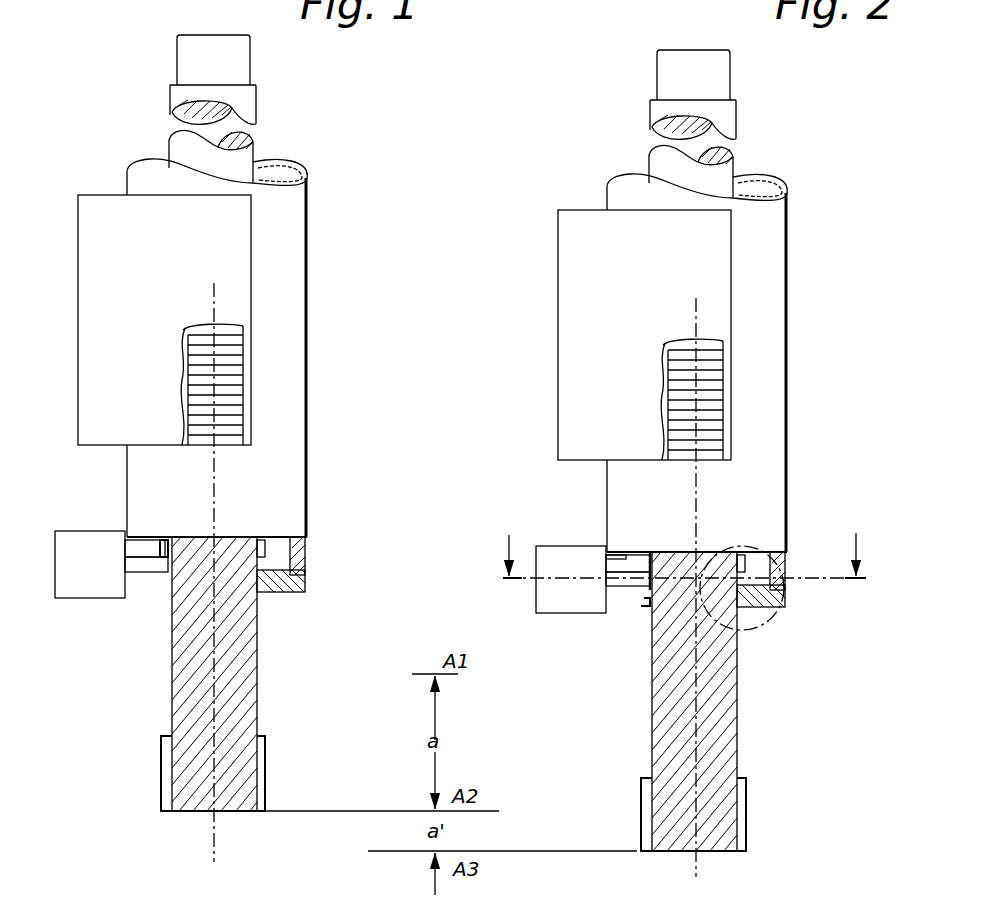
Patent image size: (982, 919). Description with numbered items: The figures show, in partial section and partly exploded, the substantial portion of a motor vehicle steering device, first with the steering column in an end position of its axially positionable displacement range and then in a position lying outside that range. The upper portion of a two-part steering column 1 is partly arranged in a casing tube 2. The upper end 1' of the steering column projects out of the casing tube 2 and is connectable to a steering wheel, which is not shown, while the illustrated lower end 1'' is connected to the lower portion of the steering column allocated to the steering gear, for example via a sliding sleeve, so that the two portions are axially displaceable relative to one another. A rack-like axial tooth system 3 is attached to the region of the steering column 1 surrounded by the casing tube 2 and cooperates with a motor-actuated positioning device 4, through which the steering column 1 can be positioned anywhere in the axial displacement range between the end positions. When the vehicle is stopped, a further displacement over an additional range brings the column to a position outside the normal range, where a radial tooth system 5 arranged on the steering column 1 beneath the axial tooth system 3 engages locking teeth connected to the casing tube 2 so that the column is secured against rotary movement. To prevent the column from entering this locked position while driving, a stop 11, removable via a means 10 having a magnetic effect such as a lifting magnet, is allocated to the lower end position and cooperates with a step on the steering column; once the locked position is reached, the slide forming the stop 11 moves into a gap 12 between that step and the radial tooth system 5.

In FIG. 1, the steering column 1 is at (319, 674).
In FIG. 2, the steering column 1 is at (606, 702).
In FIG. 1, the upper end of the steering column 1' is at (319, 108).
In FIG. 2, the upper end of the steering column 1' is at (608, 123).
In FIG. 1, the lower end of the steering column 1'' is at (315, 713).
In FIG. 2, the lower end of the steering column 1'' is at (610, 740).
In FIG. 1, the casing tube 2 is at (312, 245).
In FIG. 2, the casing tube 2 is at (603, 197).
In FIG. 1, the axial tooth system 3 is at (206, 378).
In FIG. 2, the axial tooth system 3 is at (703, 383).
In FIG. 1, the positioning device 4 is at (258, 292).
In FIG. 2, the positioning device 4 is at (475, 260).
In FIG. 2, the radial tooth system 5 is at (642, 602).
In FIG. 1, the means having a magnetic effect 10 is at (82, 552).
In FIG. 2, the means having a magnetic effect 10 is at (562, 557).
In FIG. 1, the stop 11 is at (152, 565).
In FIG. 2, the stop 11 is at (628, 585).
In FIG. 2, the gap 12 is at (640, 567).